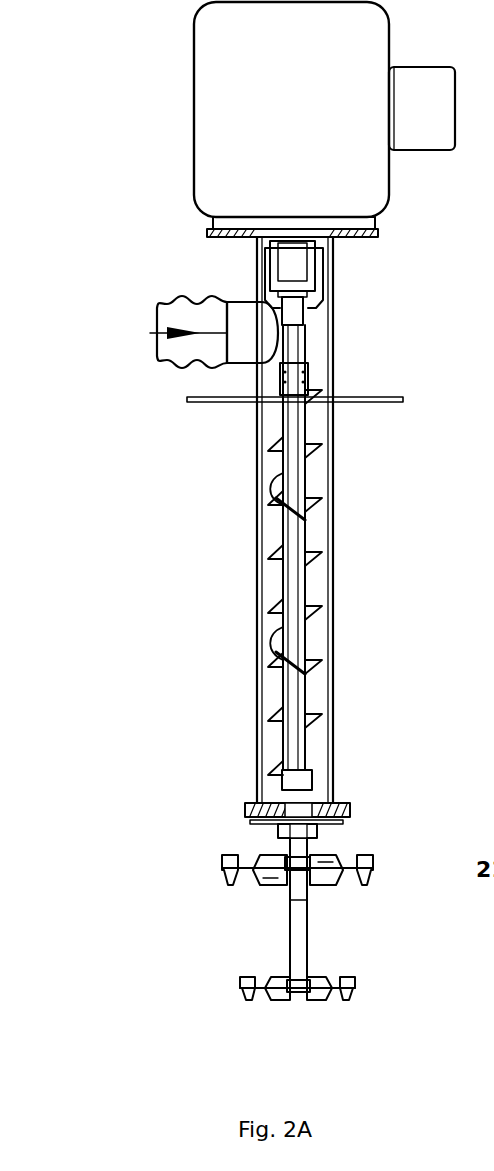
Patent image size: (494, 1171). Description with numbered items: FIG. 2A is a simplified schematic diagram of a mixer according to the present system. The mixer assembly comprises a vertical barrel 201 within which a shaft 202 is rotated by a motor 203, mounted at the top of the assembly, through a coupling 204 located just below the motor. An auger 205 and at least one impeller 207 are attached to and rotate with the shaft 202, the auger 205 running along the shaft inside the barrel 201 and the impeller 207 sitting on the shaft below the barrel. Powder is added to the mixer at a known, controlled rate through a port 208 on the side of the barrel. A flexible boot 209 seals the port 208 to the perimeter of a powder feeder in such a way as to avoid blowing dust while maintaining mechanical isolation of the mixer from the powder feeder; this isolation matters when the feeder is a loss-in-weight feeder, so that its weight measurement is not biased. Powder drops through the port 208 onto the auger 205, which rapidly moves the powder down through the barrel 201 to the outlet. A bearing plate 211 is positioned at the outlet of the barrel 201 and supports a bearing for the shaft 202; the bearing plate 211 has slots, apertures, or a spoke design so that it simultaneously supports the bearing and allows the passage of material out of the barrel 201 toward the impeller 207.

The barrel 201 is at (333, 515).
The shaft 202 is at (303, 352).
The motor 203 is at (389, 200).
The coupling 204 is at (324, 292).
The auger 205 is at (313, 605).
The impeller 207 is at (235, 880).
The port 208 is at (237, 300).
The flexible boot 209 is at (160, 302).
The bearing plate 211 is at (265, 806).